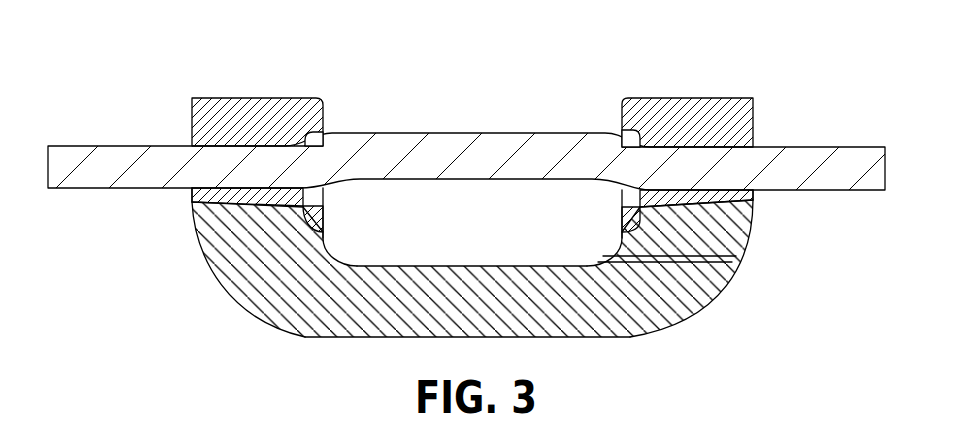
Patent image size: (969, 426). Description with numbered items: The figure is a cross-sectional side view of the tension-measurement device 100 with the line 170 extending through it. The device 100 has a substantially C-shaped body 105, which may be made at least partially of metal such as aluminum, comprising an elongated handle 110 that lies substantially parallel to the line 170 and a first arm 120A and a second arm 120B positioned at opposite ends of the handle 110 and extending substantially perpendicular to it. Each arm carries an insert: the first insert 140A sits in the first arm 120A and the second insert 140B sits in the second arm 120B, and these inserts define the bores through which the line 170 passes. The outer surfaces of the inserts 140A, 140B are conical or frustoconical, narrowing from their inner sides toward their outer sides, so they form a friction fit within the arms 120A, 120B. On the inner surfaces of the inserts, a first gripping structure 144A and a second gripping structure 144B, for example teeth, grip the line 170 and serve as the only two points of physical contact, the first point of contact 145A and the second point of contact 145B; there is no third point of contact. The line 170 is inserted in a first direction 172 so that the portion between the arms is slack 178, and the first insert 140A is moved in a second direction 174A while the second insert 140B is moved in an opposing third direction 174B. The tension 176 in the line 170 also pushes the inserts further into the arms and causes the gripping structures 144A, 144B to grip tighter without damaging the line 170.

The tension-measurement device 100 is at (163, 56).
The body 105 is at (466, 286).
The handle 110 is at (362, 338).
The first arm 120A is at (205, 262).
The second arm 120B is at (752, 228).
The first insert 140A is at (277, 98).
The second insert 140B is at (700, 98).
The first gripping structure 144A is at (248, 190).
The first point of contact 145A is at (222, 228).
The second gripping structure 144B is at (716, 150).
The second point of contact 145B is at (735, 174).
The line 170 is at (68, 146).
The first direction 172 is at (470, 187).
The second direction 174A is at (362, 115).
The third direction 174B is at (584, 115).
The tension 176 is at (148, 118).
The slack 178 is at (448, 53).